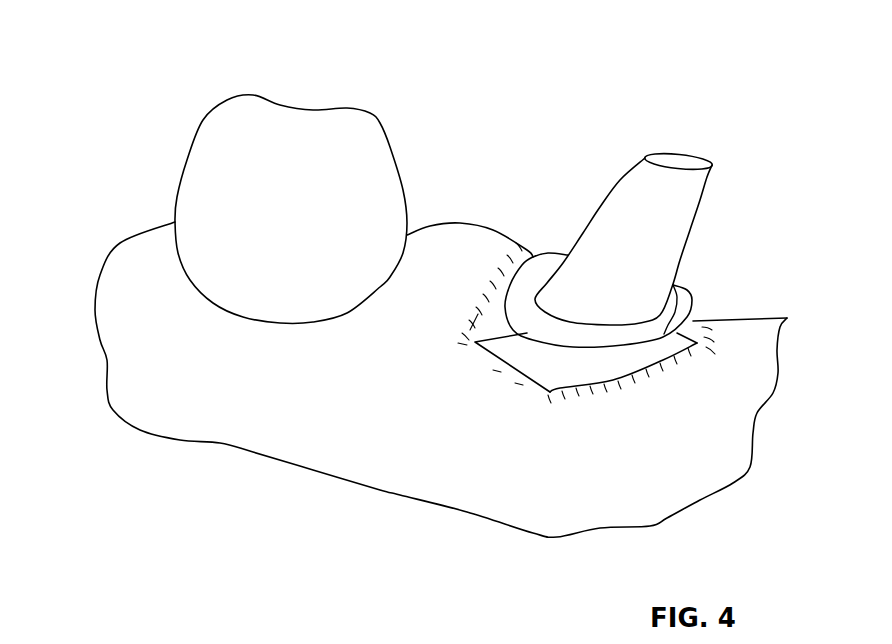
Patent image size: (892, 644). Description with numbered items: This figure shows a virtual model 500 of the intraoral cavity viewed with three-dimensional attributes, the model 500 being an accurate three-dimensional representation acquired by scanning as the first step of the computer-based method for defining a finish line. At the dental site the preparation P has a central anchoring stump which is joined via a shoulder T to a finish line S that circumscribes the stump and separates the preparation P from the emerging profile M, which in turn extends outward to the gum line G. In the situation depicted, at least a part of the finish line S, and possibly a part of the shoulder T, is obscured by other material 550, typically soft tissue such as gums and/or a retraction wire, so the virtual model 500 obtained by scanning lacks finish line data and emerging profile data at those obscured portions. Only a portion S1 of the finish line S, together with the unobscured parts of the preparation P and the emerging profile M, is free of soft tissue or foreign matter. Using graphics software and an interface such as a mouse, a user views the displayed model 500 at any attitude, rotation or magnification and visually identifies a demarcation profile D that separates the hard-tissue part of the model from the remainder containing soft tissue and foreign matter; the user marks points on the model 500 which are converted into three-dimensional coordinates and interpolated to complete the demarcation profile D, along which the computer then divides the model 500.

The virtual model 500 is at (590, 277).
The other material 550 is at (500, 252).
The shoulder T is at (538, 280).
The preparation P is at (642, 245).
The finish line S is at (688, 286).
The emerging profile M is at (700, 320).
The gum line G is at (708, 390).
The portion of finish line S1 is at (557, 412).
The demarcation profile D is at (570, 390).